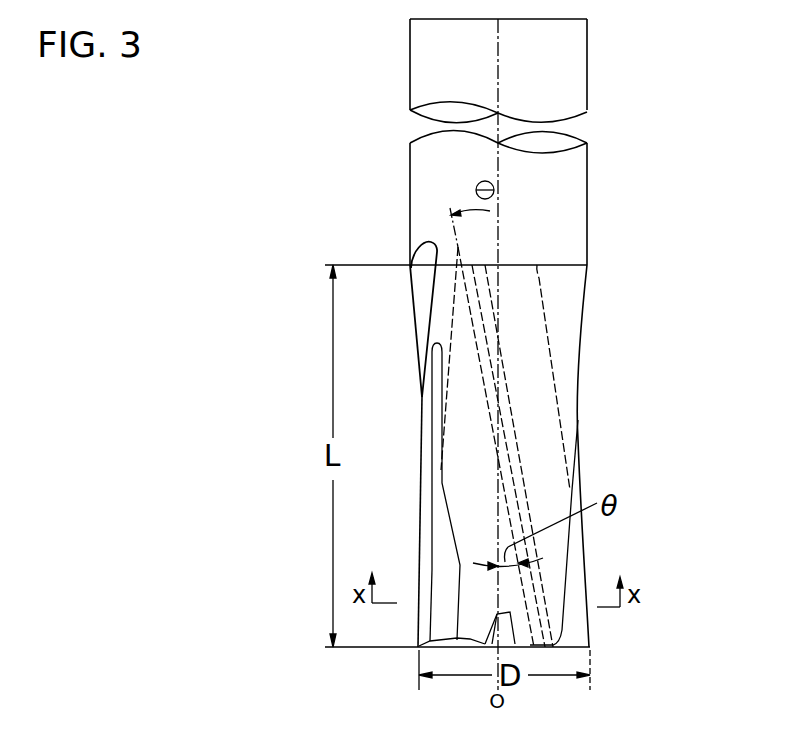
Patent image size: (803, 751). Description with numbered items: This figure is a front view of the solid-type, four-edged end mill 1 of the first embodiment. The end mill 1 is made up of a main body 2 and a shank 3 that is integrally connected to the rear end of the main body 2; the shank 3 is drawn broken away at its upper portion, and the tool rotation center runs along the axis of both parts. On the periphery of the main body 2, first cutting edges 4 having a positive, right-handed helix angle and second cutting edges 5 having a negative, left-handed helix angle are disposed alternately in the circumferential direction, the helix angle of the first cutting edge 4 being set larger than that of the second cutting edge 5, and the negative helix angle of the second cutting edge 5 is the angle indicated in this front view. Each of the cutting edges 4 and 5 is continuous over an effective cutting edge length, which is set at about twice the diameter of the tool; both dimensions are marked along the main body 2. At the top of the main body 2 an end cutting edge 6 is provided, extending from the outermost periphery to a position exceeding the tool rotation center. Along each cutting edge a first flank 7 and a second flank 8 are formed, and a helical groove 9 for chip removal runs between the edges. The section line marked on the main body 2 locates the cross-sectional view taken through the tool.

The end mill 1 is at (590, 207).
The main body 2 is at (523, 323).
The shank 3 is at (558, 62).
The first cutting edge 4 is at (582, 468).
The second cutting edge 5 is at (487, 413).
The end cutting edge 6 is at (563, 648).
The first flank 7 is at (470, 305).
The second flank 8 is at (427, 517).
The helical groove 9 is at (460, 357).